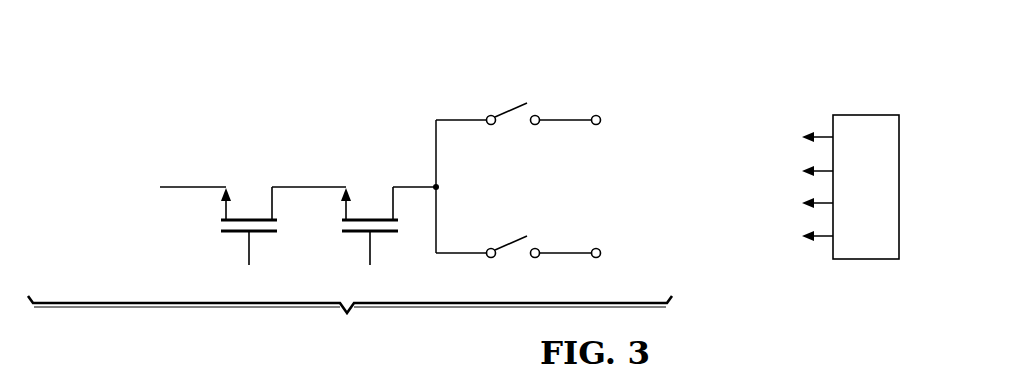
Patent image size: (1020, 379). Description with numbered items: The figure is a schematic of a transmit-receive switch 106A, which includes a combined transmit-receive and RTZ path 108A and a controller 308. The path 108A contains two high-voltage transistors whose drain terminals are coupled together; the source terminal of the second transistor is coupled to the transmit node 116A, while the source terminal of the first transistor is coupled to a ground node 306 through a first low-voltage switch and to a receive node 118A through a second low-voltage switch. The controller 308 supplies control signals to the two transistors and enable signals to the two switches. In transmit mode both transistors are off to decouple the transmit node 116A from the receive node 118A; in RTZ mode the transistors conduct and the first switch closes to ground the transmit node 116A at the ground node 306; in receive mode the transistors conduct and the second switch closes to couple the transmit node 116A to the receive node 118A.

The transmit-receive switch 106A is at (299, 72).
The combined transmit-receive and RTZ path 108A is at (350, 178).
The transmit node 116A is at (193, 186).
The receive node 118A is at (598, 248).
The ground node 306 is at (598, 115).
The controller 308 is at (863, 114).